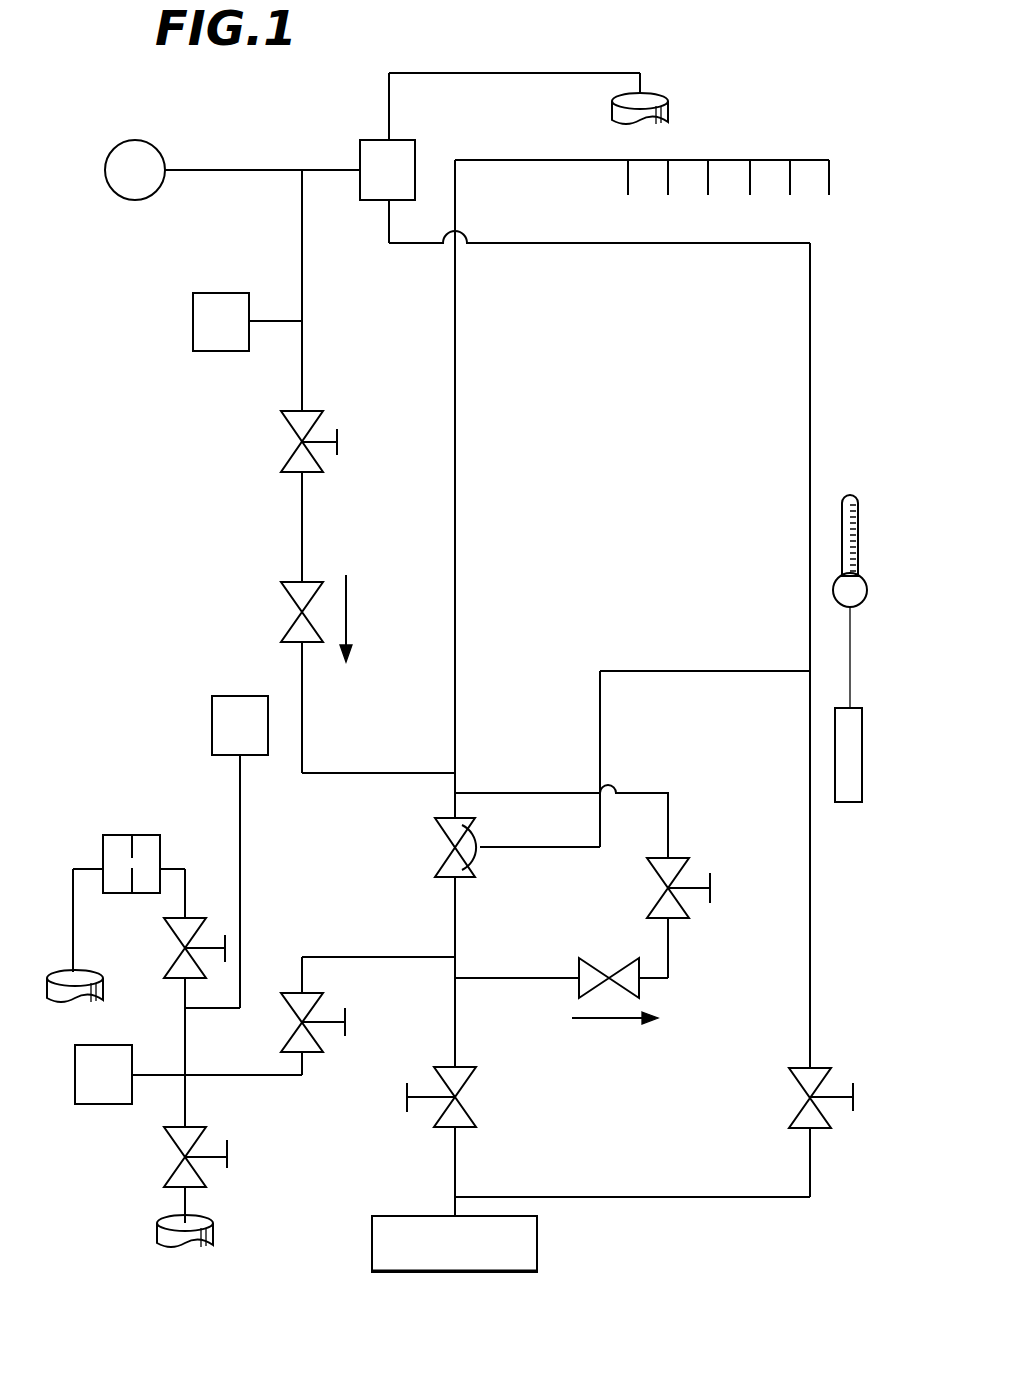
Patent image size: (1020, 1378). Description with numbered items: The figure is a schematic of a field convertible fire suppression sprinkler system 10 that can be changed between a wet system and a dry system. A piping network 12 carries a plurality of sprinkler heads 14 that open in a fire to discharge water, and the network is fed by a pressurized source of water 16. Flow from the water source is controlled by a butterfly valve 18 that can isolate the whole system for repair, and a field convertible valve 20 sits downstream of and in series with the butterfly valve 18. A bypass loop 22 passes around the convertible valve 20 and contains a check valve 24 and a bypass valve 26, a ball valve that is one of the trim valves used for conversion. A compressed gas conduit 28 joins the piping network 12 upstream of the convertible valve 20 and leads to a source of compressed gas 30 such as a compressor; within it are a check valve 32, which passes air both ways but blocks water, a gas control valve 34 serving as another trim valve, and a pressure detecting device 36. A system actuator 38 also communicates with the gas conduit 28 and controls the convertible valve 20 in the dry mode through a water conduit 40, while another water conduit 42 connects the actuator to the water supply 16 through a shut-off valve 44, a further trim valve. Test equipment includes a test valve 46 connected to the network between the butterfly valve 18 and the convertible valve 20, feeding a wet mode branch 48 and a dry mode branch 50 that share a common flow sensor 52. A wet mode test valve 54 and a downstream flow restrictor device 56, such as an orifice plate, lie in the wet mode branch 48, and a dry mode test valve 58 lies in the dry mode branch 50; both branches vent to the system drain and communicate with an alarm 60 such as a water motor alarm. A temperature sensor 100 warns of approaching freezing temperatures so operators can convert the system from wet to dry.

The convertible fire suppression sprinkler system 10 is at (160, 509).
The piping network 12 is at (455, 435).
The sprinkler heads 14 is at (829, 182).
The pressurized source of water 16 is at (538, 1222).
The valve 18 is at (465, 1088).
The field convertible valve 20 is at (440, 857).
The bypass loop 22 is at (650, 793).
The check valve 24 is at (590, 962).
The bypass valve 26 is at (685, 858).
The compressed gas conduit 28 is at (302, 350).
The source of compressed gas 30 is at (162, 188).
The check valve 32 is at (290, 595).
The gas control valve 34 is at (290, 457).
The pressure detecting device 36 is at (193, 340).
The system actuator 38 is at (370, 148).
The water conduit 40 is at (678, 671).
The water conduit 42 is at (810, 410).
The shut-off valve 44 is at (820, 1068).
The test valve 46 is at (320, 1048).
The wet mode branch 48 is at (185, 1025).
The dry mode branch 50 is at (185, 1095).
The flow sensor 52 is at (97, 1104).
The wet mode test valve 54 is at (195, 918).
The flow restrictor device 56 is at (113, 835).
The dry mode test valve 58 is at (205, 1183).
The alarm 60 is at (212, 730).
The temperature sensor 100 is at (850, 632).